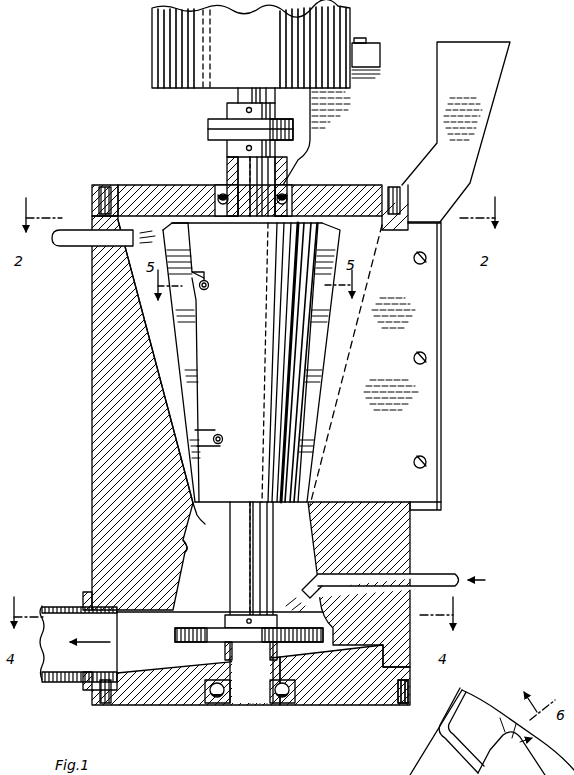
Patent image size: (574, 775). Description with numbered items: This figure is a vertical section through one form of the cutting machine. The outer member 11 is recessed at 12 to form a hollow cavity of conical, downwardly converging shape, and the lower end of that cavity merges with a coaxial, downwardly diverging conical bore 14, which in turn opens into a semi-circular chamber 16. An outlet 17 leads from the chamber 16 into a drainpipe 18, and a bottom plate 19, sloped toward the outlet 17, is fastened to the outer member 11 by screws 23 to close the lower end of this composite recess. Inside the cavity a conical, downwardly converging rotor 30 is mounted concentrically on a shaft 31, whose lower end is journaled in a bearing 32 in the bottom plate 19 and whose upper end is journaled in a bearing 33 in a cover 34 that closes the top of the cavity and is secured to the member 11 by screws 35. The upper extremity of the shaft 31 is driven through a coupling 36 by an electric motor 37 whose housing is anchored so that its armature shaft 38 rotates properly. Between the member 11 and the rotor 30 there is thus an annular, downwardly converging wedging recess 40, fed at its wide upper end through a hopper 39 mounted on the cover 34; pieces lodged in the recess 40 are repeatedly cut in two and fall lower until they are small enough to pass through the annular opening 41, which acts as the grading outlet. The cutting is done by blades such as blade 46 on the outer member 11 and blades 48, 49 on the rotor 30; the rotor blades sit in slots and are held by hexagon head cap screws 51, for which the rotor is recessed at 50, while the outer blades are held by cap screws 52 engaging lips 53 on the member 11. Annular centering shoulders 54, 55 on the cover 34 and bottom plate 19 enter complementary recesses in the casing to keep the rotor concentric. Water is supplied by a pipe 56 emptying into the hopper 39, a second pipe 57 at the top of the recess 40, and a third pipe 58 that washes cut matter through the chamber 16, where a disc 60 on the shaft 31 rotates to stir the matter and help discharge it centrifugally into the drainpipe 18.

The outer member 11 is at (98, 382).
The recess 12 is at (157, 336).
The bore 14 is at (185, 544).
The semi-circular chamber 16 is at (150, 690).
The outlet 17 is at (100, 662).
The drainpipe 18 is at (56, 606).
The bottom plate 19 is at (333, 688).
The screws 23 is at (104, 705).
The rotor 30 is at (305, 361).
The shaft 31 is at (282, 190).
The bearing 32 is at (278, 703).
The bearing 33 is at (215, 188).
The cover 34 is at (355, 200).
The screws 35 is at (104, 186).
The coupling 36 is at (220, 127).
The electric motor 37 is at (178, 42).
The armature shaft 38 is at (238, 93).
The hopper 39 is at (485, 85).
The recess 40 is at (175, 412).
The annular opening 41 is at (197, 510).
The blade 46 is at (438, 386).
The blade 48 is at (190, 340).
The blade 49 is at (329, 400).
The recess 50 is at (203, 280).
The hexagon head cap screws 51 is at (209, 287).
The cap screws 52 is at (430, 263).
The lips 53 is at (432, 508).
The annular centering shoulder 54 is at (408, 207).
The annular centering shoulder 55 is at (411, 668).
The water supply pipe 56 is at (369, 52).
The second water supply pipe 57 is at (76, 247).
The third pipe 58 is at (436, 574).
The disc 60 is at (198, 628).